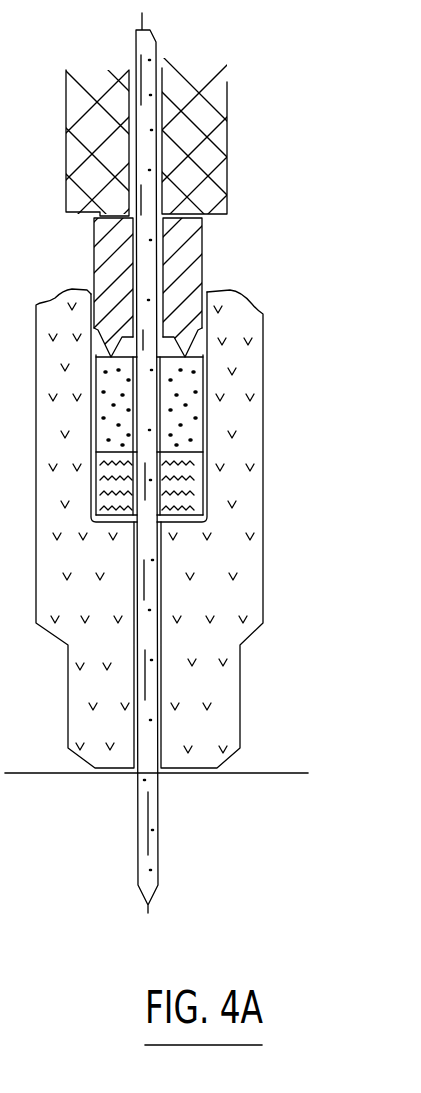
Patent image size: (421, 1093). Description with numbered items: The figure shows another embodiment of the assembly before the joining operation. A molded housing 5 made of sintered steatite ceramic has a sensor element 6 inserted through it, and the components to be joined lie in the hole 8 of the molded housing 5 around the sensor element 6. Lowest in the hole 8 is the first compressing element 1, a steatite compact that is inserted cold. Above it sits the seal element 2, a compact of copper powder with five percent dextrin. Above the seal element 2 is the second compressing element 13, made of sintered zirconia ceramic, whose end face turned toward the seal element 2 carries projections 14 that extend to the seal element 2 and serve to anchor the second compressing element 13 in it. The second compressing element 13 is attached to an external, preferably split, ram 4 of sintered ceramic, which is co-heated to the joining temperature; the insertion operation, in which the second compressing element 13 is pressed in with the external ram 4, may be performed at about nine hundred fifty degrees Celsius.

The first compressing element 1 is at (193, 494).
The seal element 2 is at (193, 418).
The external ram 4 is at (229, 152).
The molded housing 5 is at (243, 662).
The sensor element 6 is at (163, 853).
The hole 8 is at (210, 311).
The second compressing element 13 is at (203, 262).
The projections 14 is at (183, 345).